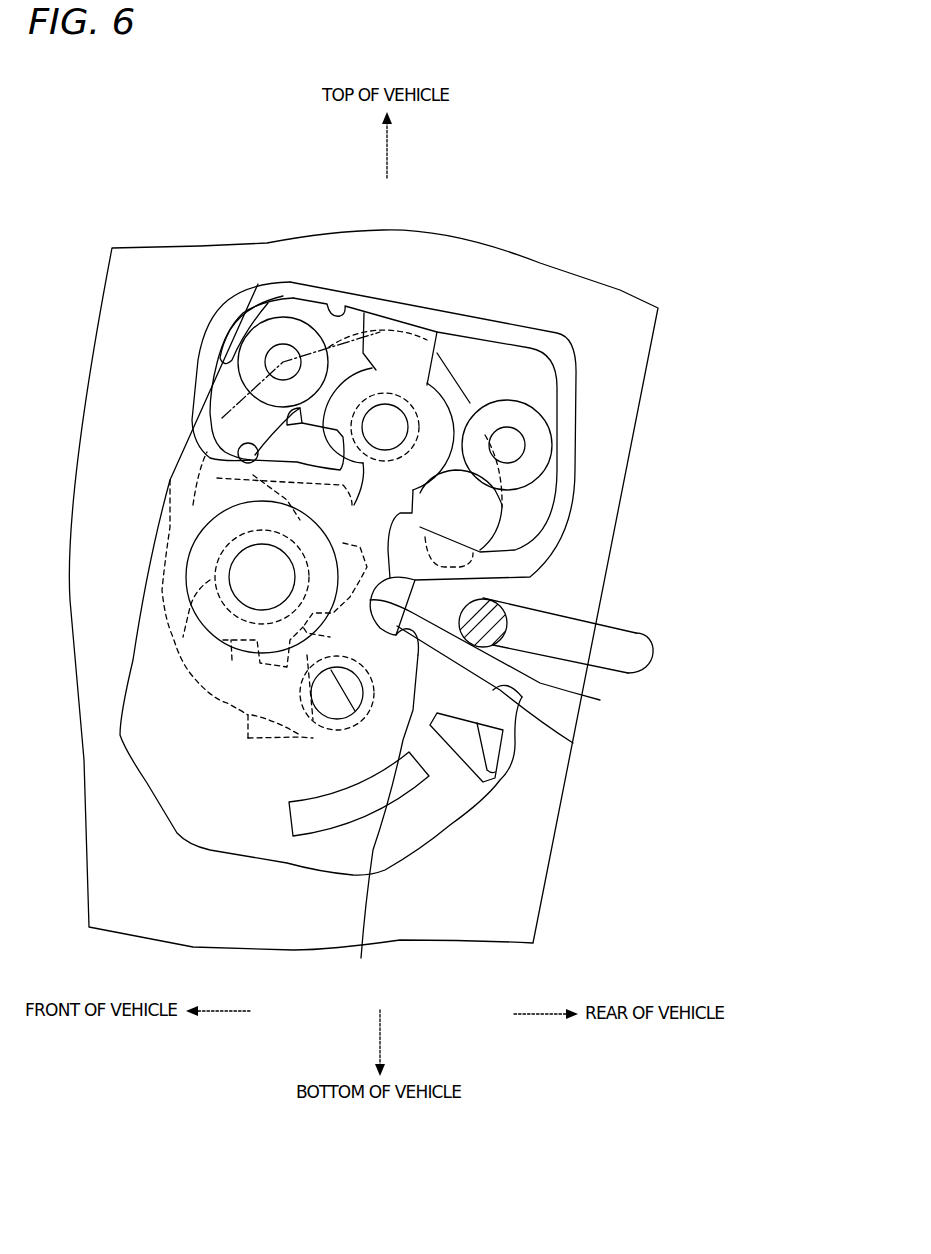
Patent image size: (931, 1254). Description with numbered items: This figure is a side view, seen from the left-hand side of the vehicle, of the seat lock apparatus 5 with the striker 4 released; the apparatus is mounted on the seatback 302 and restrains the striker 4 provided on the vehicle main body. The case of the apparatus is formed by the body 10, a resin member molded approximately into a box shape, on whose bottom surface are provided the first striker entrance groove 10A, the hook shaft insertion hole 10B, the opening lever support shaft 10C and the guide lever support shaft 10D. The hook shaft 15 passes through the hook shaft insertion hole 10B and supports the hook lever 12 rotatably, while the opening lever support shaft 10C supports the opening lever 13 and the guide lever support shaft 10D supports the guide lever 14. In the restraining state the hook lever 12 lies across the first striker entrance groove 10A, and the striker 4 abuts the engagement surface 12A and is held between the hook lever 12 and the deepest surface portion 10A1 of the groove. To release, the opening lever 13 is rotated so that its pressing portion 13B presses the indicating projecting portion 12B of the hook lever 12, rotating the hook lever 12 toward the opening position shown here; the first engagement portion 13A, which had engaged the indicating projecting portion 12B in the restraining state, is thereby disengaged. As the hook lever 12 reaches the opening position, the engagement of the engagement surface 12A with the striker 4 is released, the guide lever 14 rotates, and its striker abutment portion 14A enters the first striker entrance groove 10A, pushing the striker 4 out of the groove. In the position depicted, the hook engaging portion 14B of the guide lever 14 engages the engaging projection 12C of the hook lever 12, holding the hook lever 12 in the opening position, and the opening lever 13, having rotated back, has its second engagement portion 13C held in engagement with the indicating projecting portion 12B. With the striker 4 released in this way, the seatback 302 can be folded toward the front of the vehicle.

The seat lock apparatus 5 is at (386, 584).
The seatback 302 is at (651, 346).
The hook lever 12 is at (497, 517).
The opening lever 13 is at (290, 283).
The first engagement portion 13A is at (280, 423).
The indicating projecting portion 12B is at (287, 420).
The second engagement portion 13C is at (215, 440).
The pressing portion 13B is at (217, 478).
The opening lever support shaft 10C is at (390, 404).
The hook shaft 15 is at (202, 530).
The hook shaft insertion hole 10B is at (215, 570).
The engaging projection 12C is at (222, 623).
The engagement surface 12A is at (418, 585).
The striker 4 is at (641, 652).
The first striker entrance groove 10A is at (573, 743).
The deepest surface portion 10A1 is at (600, 700).
The body 10 is at (317, 857).
The guide lever support shaft 10D is at (318, 715).
The guide lever 14 is at (252, 670).
The hook engaging portion 14B is at (232, 660).
The striker abutment portion 14A is at (383, 821).